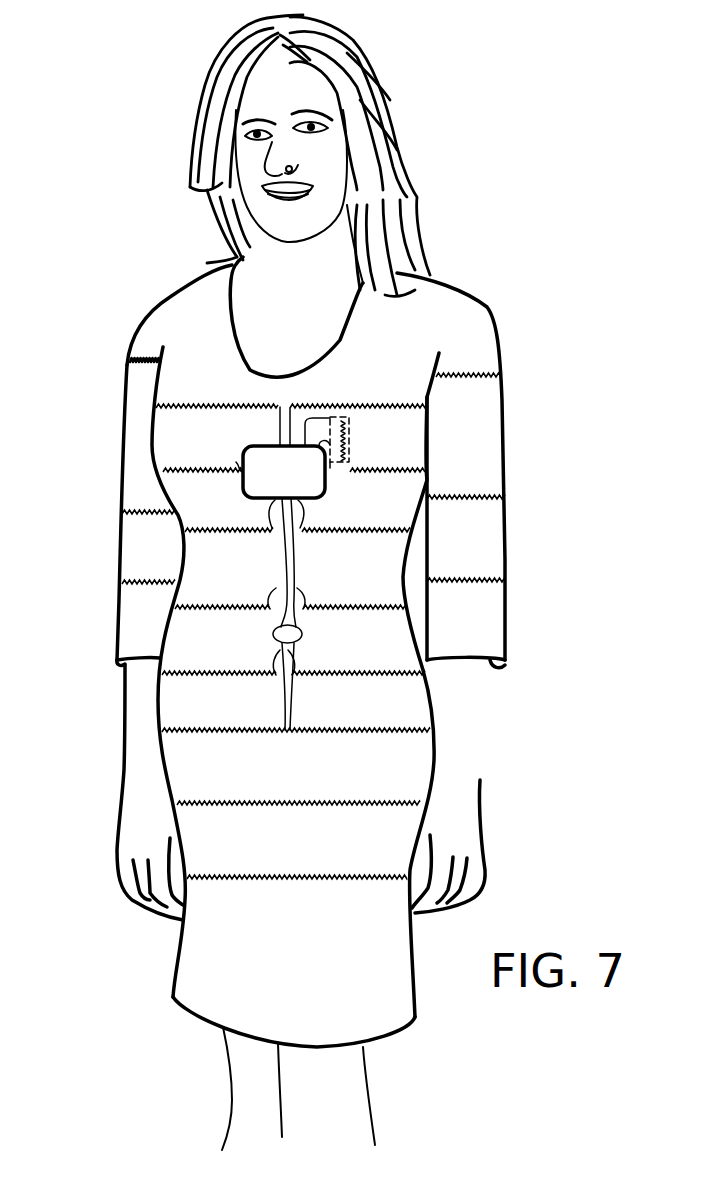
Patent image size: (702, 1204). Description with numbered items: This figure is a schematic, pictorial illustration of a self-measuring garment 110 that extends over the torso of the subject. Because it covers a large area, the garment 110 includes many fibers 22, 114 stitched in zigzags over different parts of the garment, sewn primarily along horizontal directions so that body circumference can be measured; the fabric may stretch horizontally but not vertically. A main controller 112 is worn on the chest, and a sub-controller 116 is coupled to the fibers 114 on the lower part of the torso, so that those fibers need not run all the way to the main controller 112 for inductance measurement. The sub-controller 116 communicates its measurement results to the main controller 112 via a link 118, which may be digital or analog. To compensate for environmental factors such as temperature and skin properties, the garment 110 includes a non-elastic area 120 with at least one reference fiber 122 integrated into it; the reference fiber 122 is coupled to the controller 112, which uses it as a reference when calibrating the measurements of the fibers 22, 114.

The self-measuring garment 110 is at (147, 313).
The fibers 22 is at (210, 408).
The fibers 114 is at (193, 607).
The main controller 112 is at (325, 498).
The link 118 is at (295, 563).
The sub-controller 116 is at (290, 636).
The non-elastic area 120 is at (349, 419).
The reference fiber 122 is at (349, 440).